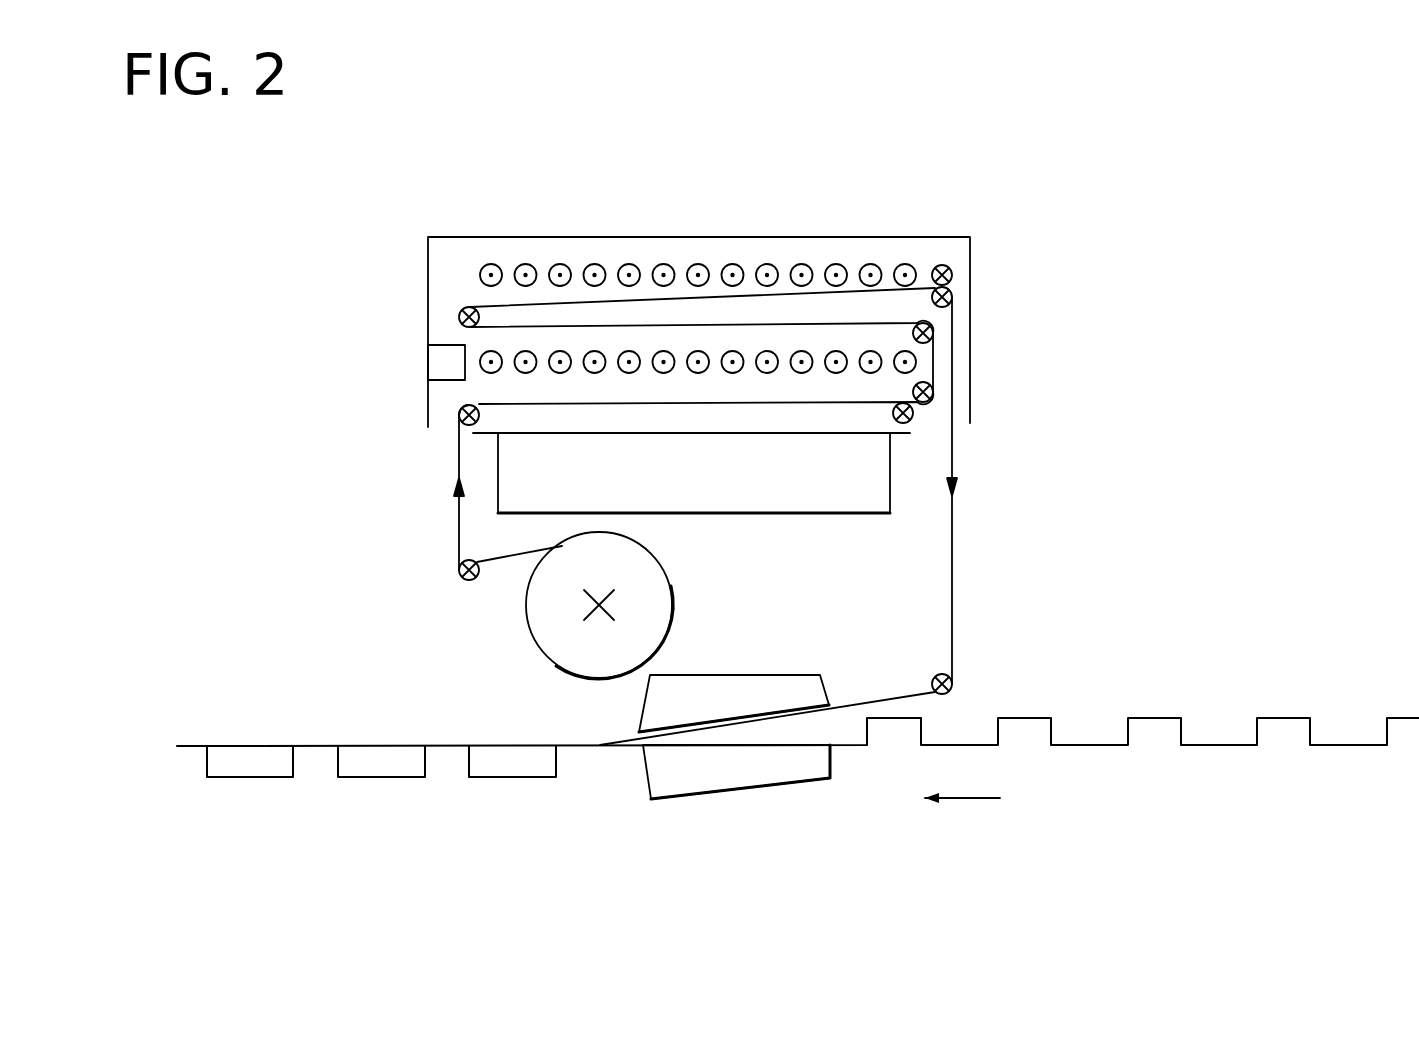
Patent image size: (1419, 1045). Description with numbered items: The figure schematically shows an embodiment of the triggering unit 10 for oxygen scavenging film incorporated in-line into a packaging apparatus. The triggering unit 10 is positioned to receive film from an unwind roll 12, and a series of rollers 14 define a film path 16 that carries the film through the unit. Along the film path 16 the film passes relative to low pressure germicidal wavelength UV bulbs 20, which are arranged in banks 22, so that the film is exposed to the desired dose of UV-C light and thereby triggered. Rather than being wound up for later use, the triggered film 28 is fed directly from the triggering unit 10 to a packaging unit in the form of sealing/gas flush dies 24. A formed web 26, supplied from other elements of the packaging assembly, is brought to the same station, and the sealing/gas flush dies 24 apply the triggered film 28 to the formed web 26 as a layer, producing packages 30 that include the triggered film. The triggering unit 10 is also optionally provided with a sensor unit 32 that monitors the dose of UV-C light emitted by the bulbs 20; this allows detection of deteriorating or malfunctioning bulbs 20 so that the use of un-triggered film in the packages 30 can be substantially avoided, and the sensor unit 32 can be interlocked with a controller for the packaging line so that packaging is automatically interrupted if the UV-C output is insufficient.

The triggering unit 10 is at (908, 168).
The unwind roll 12 is at (533, 637).
The rollers 14 is at (953, 277).
The film path 16 is at (683, 292).
The low pressure germicidal wavelength UV bulbs 20 is at (657, 262).
The banks 22 is at (672, 250).
The sealing/gas flush dies 24 is at (733, 800).
The formed web 26 is at (1214, 728).
The triggered film 28 is at (955, 577).
The packages 30 is at (502, 788).
The sensor unit 32 is at (437, 362).